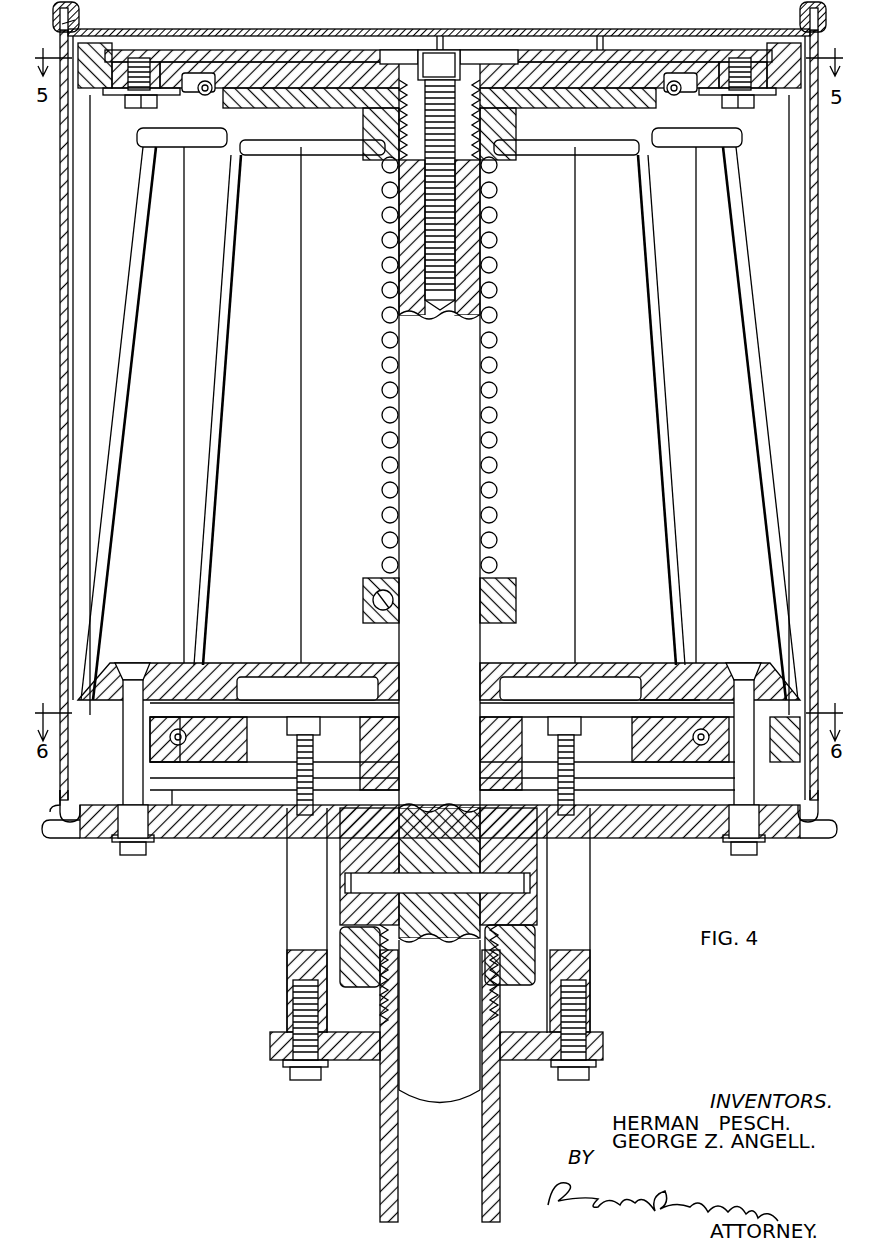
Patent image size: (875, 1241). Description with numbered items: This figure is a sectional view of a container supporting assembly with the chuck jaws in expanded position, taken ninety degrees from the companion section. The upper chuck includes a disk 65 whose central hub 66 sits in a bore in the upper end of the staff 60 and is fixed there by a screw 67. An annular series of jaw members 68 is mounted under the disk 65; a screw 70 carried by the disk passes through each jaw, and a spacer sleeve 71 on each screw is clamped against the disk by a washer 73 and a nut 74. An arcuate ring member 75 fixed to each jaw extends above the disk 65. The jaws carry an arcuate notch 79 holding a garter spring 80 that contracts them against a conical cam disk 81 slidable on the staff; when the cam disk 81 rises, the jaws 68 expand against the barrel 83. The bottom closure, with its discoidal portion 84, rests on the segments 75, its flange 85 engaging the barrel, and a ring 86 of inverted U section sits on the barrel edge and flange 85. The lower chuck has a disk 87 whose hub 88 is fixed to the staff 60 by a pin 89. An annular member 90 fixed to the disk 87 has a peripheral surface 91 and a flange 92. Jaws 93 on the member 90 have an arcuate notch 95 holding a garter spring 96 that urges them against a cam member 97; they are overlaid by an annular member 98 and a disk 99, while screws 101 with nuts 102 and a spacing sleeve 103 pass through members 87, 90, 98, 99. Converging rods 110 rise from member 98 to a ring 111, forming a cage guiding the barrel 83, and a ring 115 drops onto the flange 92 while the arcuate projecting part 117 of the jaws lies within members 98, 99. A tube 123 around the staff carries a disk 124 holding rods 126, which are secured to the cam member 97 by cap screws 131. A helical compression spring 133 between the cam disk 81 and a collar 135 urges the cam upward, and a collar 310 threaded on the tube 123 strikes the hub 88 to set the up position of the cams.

The staff 60 is at (452, 442).
The disk 65 is at (557, 55).
The central hub 66 is at (478, 182).
The screw 67 is at (452, 130).
The jaw members 68 is at (222, 90).
The screw 70 is at (140, 62).
The spacer sleeve 71 is at (115, 62).
The washer 73 is at (205, 96).
The nut 74 is at (145, 108).
The arcuate ring member 75 is at (108, 95).
The arcuate notch 79 is at (191, 73).
The garter spring 80 is at (700, 135).
The cam disk 81 is at (290, 100).
The barrel 83 is at (62, 322).
The discoidal portion 84 is at (400, 26).
The flange 85 is at (75, 20).
The ring 86 is at (311, 28).
The disk 87 is at (208, 838).
The central hub 88 is at (336, 916).
The pin 89 is at (437, 884).
The annular member 90 is at (262, 766).
The peripheral surface 91 is at (62, 804).
The flange 92 is at (54, 822).
The jaws 93 is at (206, 718).
The arcuate notch 95 is at (160, 722).
The garter spring 96 is at (698, 736).
The cam member 97 is at (232, 766).
The annular member 98 is at (658, 708).
The disk 99 is at (545, 672).
The screws 101 is at (138, 666).
The nuts 102 is at (115, 840).
The spacing sleeve 103 is at (752, 756).
The converging rods 110 is at (735, 236).
The ring 111 is at (618, 148).
The ring 115 is at (810, 818).
The arcuate projecting part 117 is at (112, 700).
The tube 123 is at (490, 1108).
The disk 124 is at (358, 1056).
The rods 126 is at (286, 850).
The cap screws 131 is at (312, 720).
The helical compression spring 133 is at (492, 282).
The collar 135 is at (496, 612).
The collar 310 is at (545, 938).